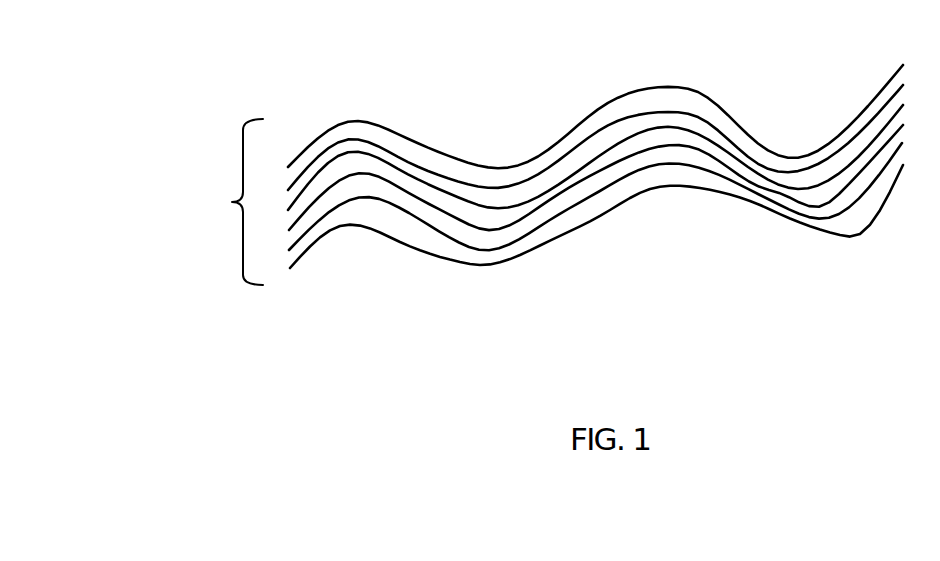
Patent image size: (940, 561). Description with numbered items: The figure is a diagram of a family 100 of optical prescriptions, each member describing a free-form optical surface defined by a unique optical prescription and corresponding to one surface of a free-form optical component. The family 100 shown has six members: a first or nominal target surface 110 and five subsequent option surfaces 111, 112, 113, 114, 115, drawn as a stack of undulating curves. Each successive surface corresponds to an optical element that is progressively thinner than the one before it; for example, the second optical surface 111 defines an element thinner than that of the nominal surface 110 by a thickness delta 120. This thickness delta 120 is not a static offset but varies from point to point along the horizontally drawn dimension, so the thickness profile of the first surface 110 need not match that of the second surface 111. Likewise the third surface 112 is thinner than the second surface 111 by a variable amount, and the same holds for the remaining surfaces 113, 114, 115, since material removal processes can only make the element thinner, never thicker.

The family of optical prescriptions 100 is at (232, 202).
The first or nominal target surface 110 is at (492, 149).
The second optical surface 111 is at (601, 138).
The third surface 112 is at (644, 142).
The fourth surface 113 is at (367, 186).
The fifth surface 114 is at (428, 243).
The sixth surface 115 is at (497, 278).
The thickness delta 120 is at (885, 160).